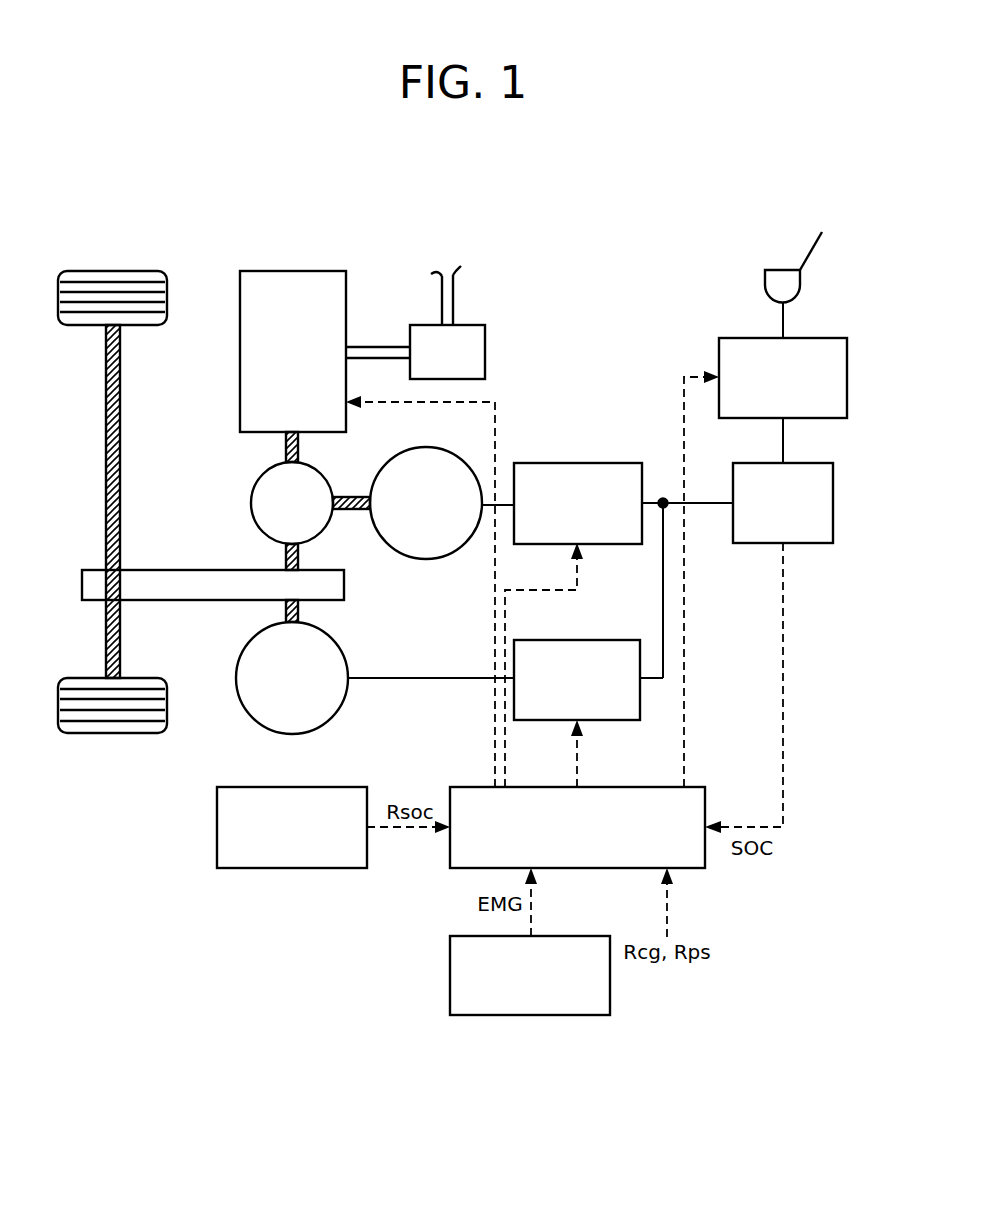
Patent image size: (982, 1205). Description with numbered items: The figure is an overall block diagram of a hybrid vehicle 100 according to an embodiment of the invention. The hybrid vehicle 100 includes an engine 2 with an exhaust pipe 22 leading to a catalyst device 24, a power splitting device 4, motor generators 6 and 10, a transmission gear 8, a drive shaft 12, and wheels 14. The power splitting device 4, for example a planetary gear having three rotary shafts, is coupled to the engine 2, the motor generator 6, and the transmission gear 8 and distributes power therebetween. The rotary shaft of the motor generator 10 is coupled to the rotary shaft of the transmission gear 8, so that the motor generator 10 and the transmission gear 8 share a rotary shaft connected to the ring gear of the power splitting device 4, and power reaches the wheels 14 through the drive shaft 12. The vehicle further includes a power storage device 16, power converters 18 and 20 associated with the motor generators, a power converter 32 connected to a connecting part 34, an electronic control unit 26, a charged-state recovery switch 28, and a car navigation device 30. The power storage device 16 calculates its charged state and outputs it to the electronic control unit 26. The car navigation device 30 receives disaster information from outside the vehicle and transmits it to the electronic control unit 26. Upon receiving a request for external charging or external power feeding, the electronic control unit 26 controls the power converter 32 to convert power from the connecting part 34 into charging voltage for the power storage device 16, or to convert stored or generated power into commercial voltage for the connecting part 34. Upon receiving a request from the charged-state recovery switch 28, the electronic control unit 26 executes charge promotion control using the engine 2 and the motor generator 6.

The hybrid vehicle 100 is at (108, 207).
The engine 2 is at (308, 271).
The power splitting device 4 is at (263, 478).
The motor generator 6 is at (453, 447).
The transmission gear 8 is at (197, 570).
The motor generator 10 is at (333, 637).
The drive shaft 12 is at (120, 408).
The wheels 14 is at (130, 271).
The power storage device 16 is at (803, 463).
The power converter 18 is at (595, 463).
The power converter 20 is at (597, 640).
The exhaust pipe 22 is at (383, 347).
The catalyst device 24 is at (485, 352).
The ECU 26 is at (471, 787).
The SOC recovery switch 28 is at (323, 787).
The car navigation device 30 is at (568, 936).
The power converter 32 is at (803, 338).
The connecting part 34 is at (780, 267).